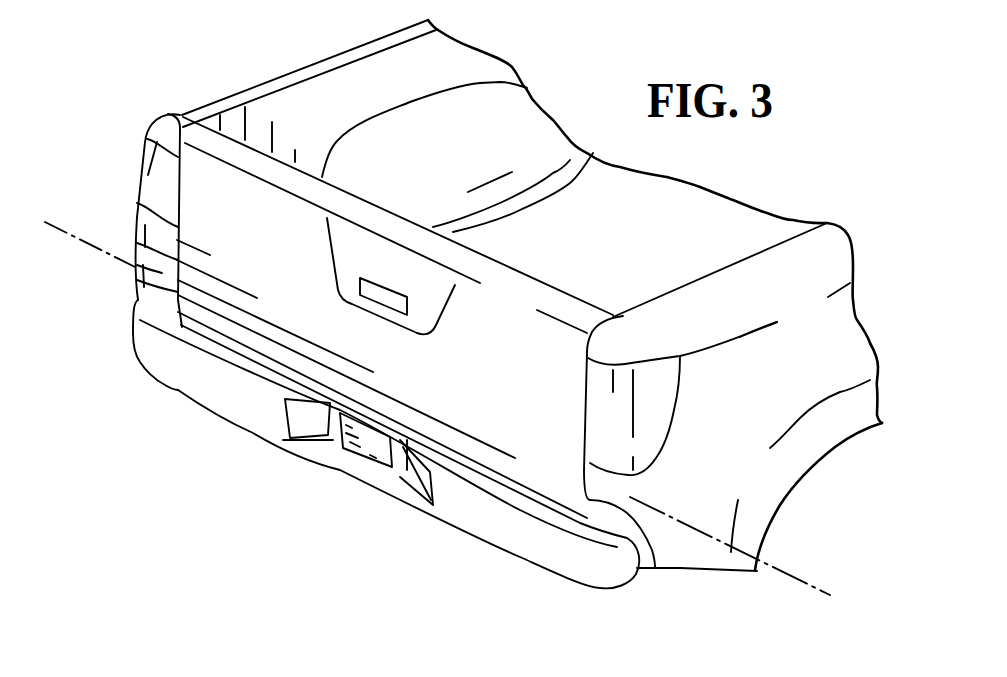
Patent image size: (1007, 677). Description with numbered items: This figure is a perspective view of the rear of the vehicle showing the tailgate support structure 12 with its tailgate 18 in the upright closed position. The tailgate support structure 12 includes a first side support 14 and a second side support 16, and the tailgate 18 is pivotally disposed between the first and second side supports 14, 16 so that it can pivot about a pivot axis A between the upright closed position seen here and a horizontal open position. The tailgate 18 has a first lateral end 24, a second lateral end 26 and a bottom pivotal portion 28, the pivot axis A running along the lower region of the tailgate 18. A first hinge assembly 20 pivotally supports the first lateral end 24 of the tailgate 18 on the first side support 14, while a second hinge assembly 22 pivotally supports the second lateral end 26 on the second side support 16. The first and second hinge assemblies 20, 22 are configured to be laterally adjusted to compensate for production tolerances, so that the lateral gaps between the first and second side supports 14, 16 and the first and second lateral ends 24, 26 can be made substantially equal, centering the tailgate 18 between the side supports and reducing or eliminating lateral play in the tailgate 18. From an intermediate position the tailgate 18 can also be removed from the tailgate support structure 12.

The tailgate support structure 12 is at (100, 150).
The first side support 14 is at (638, 337).
The second side support 16 is at (185, 115).
The tailgate 18 is at (298, 308).
The first hinge assembly 20 is at (580, 517).
The second hinge assembly 22 is at (182, 327).
The first lateral end 24 is at (657, 568).
The second lateral end 26 is at (137, 203).
The bottom pivotal portion 28 is at (473, 455).
The pivot axis A is at (808, 583).